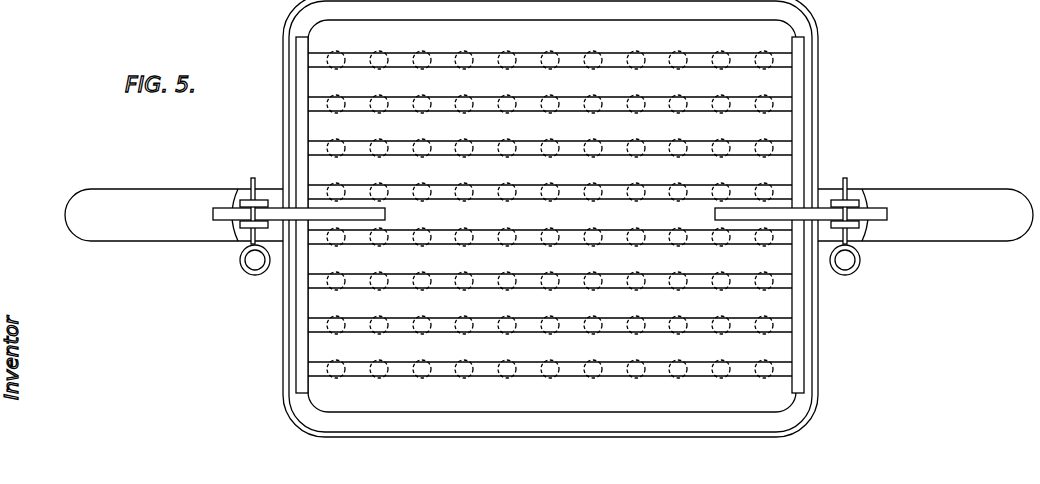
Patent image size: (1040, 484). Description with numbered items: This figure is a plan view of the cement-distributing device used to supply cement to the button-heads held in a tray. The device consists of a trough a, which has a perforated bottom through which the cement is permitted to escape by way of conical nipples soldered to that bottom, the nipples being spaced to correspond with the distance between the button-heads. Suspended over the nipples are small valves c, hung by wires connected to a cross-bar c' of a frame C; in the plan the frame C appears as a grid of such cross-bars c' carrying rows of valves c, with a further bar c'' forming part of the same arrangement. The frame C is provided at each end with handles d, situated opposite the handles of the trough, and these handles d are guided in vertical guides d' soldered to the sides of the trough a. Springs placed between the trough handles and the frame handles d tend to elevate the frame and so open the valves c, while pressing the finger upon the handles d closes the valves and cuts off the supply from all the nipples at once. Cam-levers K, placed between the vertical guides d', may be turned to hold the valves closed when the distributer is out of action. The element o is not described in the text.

The trough a is at (548, 218).
The plate o is at (552, 211).
The frame C is at (550, 215).
The valves c is at (550, 214).
The cross-bar c' is at (550, 211).
The pipe section c'' is at (550, 104).
The cam-levers K is at (550, 213).
The handles d is at (549, 215).
The vertical guides d' is at (550, 226).